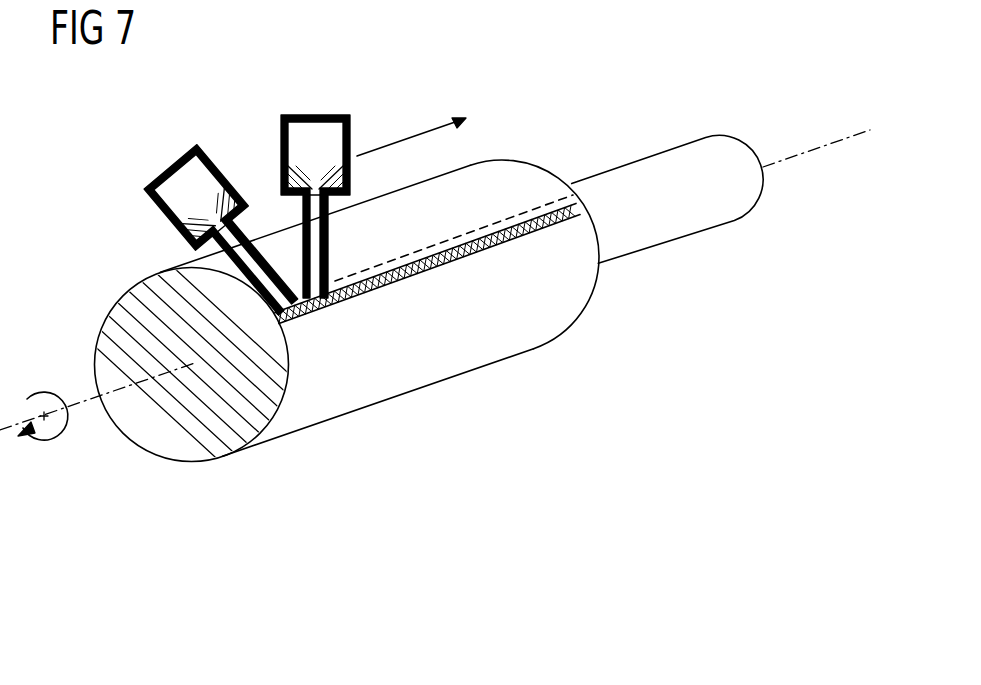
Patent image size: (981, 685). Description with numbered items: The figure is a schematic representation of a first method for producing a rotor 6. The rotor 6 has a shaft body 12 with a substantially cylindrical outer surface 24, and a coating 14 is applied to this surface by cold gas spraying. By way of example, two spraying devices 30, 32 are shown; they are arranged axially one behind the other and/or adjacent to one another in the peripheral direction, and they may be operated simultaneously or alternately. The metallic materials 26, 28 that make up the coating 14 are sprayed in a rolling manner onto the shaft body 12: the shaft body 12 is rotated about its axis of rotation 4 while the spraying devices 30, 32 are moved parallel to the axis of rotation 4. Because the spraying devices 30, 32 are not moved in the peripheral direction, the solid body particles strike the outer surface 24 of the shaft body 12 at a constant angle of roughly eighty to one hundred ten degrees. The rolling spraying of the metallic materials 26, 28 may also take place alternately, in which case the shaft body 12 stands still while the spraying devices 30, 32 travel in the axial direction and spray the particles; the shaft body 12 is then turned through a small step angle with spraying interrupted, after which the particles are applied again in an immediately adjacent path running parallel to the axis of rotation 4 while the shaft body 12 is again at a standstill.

The axis of rotation 4 is at (797, 152).
The rotor 6 is at (543, 316).
The shaft body 12 is at (664, 160).
The coating 14 is at (303, 292).
The outer surface 24 is at (513, 178).
The metallic material 26 is at (297, 320).
The metallic material 28 is at (342, 303).
The spraying device 30 is at (168, 168).
The spraying device 32 is at (313, 113).